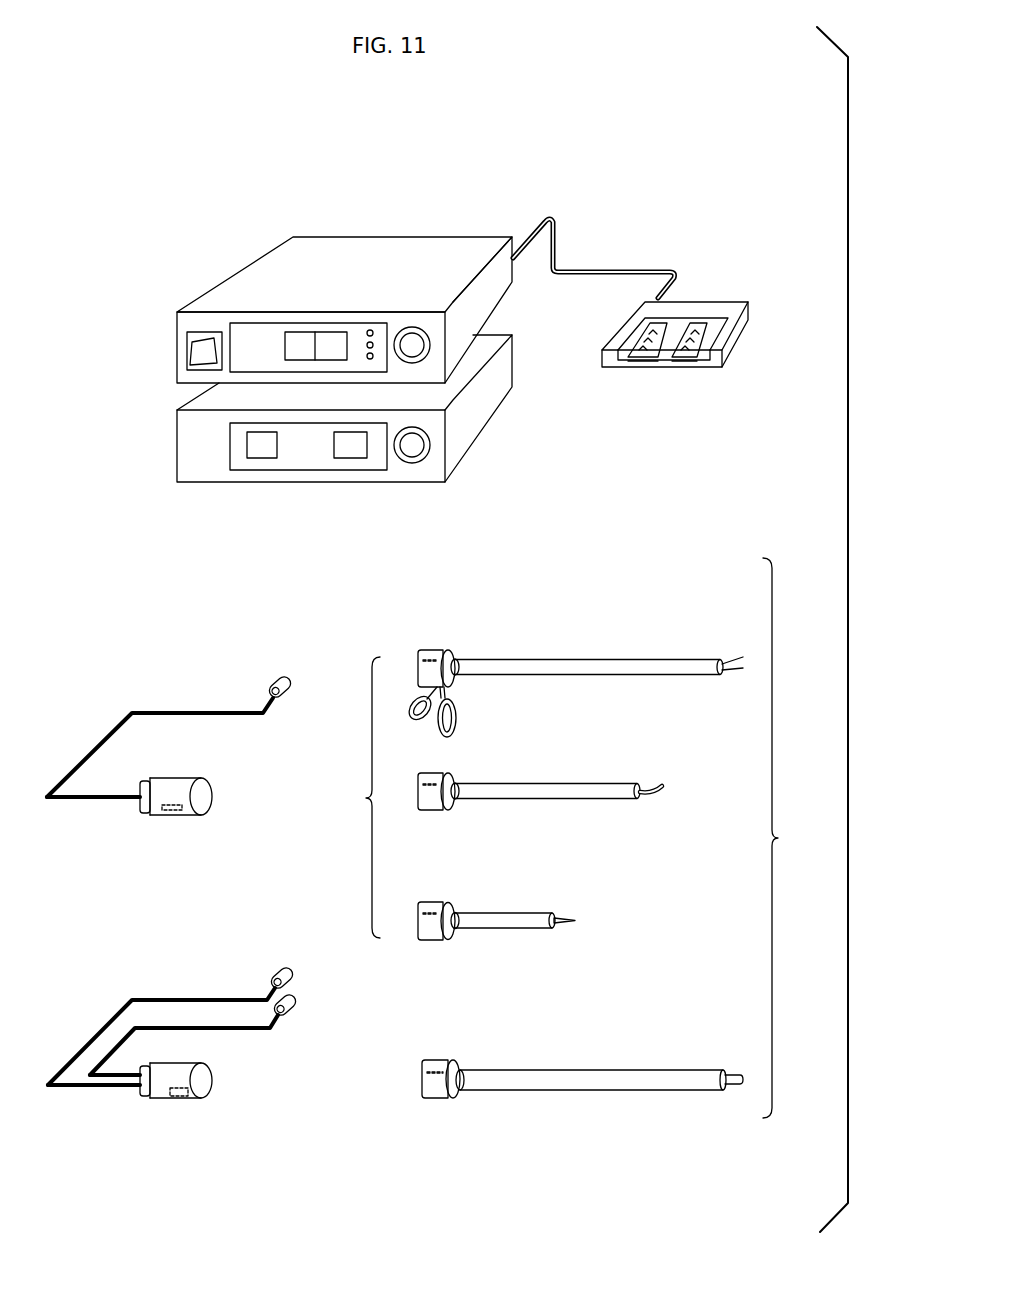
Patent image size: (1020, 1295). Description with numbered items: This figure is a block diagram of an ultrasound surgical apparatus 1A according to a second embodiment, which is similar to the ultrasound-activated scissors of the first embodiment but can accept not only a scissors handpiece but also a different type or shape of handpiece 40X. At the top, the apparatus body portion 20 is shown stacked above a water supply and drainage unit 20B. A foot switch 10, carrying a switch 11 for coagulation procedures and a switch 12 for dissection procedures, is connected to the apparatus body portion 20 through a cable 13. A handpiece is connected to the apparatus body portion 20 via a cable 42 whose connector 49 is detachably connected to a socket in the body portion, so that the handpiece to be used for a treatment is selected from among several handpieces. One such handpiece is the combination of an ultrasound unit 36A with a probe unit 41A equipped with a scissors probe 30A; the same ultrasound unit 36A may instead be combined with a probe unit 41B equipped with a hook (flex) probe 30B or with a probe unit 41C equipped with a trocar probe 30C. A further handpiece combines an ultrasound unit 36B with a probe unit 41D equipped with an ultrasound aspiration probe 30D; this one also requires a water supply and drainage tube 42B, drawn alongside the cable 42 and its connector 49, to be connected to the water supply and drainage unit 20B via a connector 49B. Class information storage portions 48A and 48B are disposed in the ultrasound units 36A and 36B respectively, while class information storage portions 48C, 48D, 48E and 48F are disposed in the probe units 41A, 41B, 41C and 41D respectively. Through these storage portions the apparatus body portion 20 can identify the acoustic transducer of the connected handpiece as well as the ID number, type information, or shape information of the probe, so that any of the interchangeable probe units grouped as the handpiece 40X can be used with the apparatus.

The ultrasound surgical apparatus 1A is at (682, 200).
The apparatus body portion 20 is at (426, 233).
The water supply and drainage unit 20B is at (178, 445).
The cable 13 is at (622, 270).
The foot switch 10 is at (675, 333).
The switch for coagulation procedures 11 is at (643, 361).
The switch for dissection procedures 12 is at (687, 361).
The cable 42 is at (95, 747).
The water supply and drainage tube 42B is at (273, 1023).
The connector 49 is at (290, 693).
The connector 49B is at (293, 1010).
The ultrasound unit 36A is at (173, 778).
The ultrasound unit 36B is at (210, 1068).
The class information storage portion 48A is at (172, 818).
The class information storage portion 48B is at (180, 1102).
The class information storage portion 48C is at (461, 632).
The class information storage portion 48D is at (461, 761).
The class information storage portion 48E is at (461, 885).
The class information storage portion 48F is at (464, 1046).
The probe unit 41A is at (579, 693).
The probe unit 41B is at (545, 813).
The probe unit 41C is at (502, 941).
The probe unit 41D is at (588, 1100).
The scissors probe 30A is at (733, 675).
The hook (flex) probe 30B is at (653, 797).
The trocar probe 30C is at (567, 925).
The ultrasound aspiration probe 30D is at (735, 1085).
The handpiece 40X is at (796, 838).